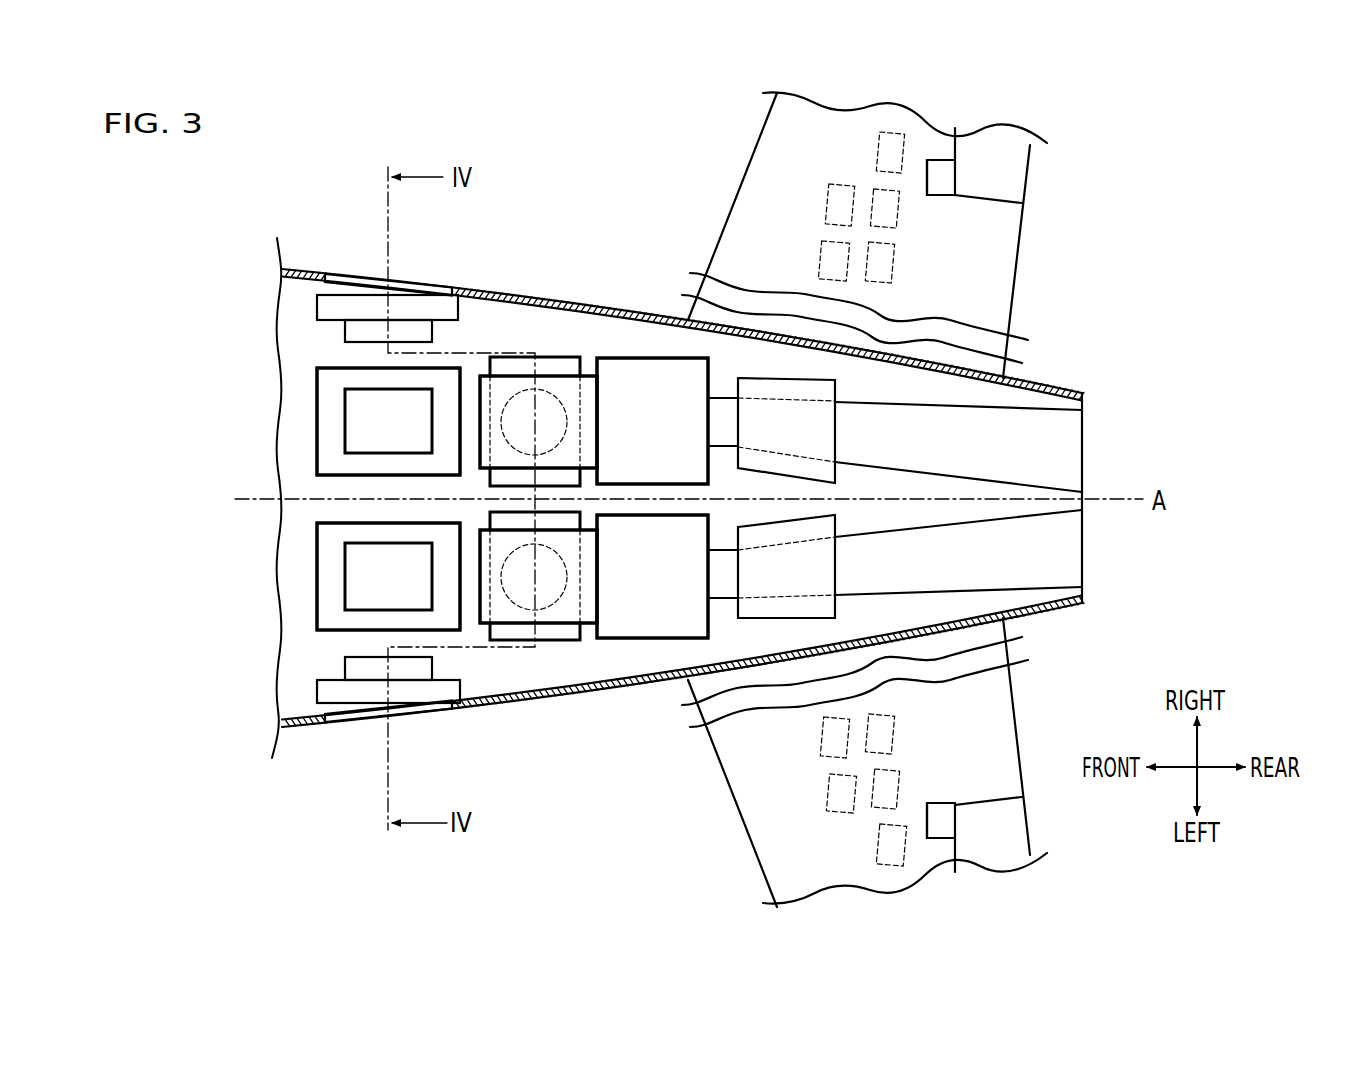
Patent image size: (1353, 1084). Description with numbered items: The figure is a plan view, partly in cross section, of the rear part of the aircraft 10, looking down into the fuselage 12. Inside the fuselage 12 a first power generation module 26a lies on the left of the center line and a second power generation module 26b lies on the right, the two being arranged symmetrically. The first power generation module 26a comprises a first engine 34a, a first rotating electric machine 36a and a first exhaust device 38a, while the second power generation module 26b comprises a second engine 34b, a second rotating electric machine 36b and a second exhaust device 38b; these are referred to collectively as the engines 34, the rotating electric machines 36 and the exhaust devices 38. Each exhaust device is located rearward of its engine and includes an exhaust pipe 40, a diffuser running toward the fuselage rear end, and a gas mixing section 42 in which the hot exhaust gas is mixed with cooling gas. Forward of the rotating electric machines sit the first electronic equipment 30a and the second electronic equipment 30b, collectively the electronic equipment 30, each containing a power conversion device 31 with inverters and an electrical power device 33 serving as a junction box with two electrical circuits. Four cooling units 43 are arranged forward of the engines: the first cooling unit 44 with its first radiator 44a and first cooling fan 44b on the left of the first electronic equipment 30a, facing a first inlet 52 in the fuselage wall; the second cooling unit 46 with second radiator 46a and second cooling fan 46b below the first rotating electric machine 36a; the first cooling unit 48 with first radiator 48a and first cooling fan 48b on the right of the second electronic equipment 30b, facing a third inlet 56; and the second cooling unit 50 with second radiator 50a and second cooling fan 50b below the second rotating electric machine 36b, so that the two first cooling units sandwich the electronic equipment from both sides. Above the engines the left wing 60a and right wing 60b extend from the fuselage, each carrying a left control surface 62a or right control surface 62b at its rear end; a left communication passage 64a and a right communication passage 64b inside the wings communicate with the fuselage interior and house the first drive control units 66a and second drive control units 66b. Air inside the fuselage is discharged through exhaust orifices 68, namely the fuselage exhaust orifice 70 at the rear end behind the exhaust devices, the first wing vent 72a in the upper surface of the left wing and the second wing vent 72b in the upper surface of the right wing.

The aircraft 10 is at (186, 191).
The fuselage 12 is at (303, 266).
The first power generation module 26a is at (627, 653).
The second power generation module 26b is at (630, 345).
The electronic equipment 30 is at (303, 560).
The first electronic equipment 30a is at (317, 578).
The second electronic equipment 30b is at (315, 420).
The power conversion device 31 is at (343, 405).
The electrical power device 33 is at (327, 383).
The engines 34 is at (663, 647).
The first engine 34a is at (642, 640).
The second engine 34b is at (653, 358).
The rotating electric machines 36 is at (588, 647).
The first rotating electric machine 36a is at (587, 612).
The second rotating electric machine 36b is at (587, 412).
The exhaust devices 38 is at (953, 602).
The first exhaust device 38a is at (891, 608).
The second exhaust device 38b is at (891, 391).
The exhaust pipe 40 is at (1037, 410).
The gas mixing section 42 is at (763, 377).
The cooling units 43 is at (358, 503).
The first cooling unit 44 is at (197, 660).
The first radiator 44a is at (327, 693).
The first cooling fan 44b is at (355, 667).
The second cooling unit 46 is at (582, 758).
The second radiator 46a is at (563, 643).
The second cooling fan 46b is at (520, 610).
The first cooling unit 48 is at (197, 272).
The first radiator 48a is at (327, 303).
The first cooling fan 48b is at (355, 330).
The second cooling unit 50 is at (595, 238).
The second radiator 50a is at (565, 357).
The second cooling fan 50b is at (520, 392).
The first inlet 52 is at (342, 722).
The third inlet 56 is at (343, 277).
The left wing 60a is at (738, 813).
The right wing 60b is at (732, 202).
The left control surface 62a is at (1012, 817).
The right control surface 62b is at (1012, 180).
The left communication passage 64a is at (773, 847).
The right communication passage 64b is at (773, 150).
The first drive control units 66a is at (867, 730).
The second drive control units 66b is at (878, 148).
The exhaust orifices 68 is at (1063, 499).
The fuselage exhaust orifice 70 is at (1083, 407).
The first wing vent 72a is at (938, 812).
The second wing vent 72b is at (938, 183).